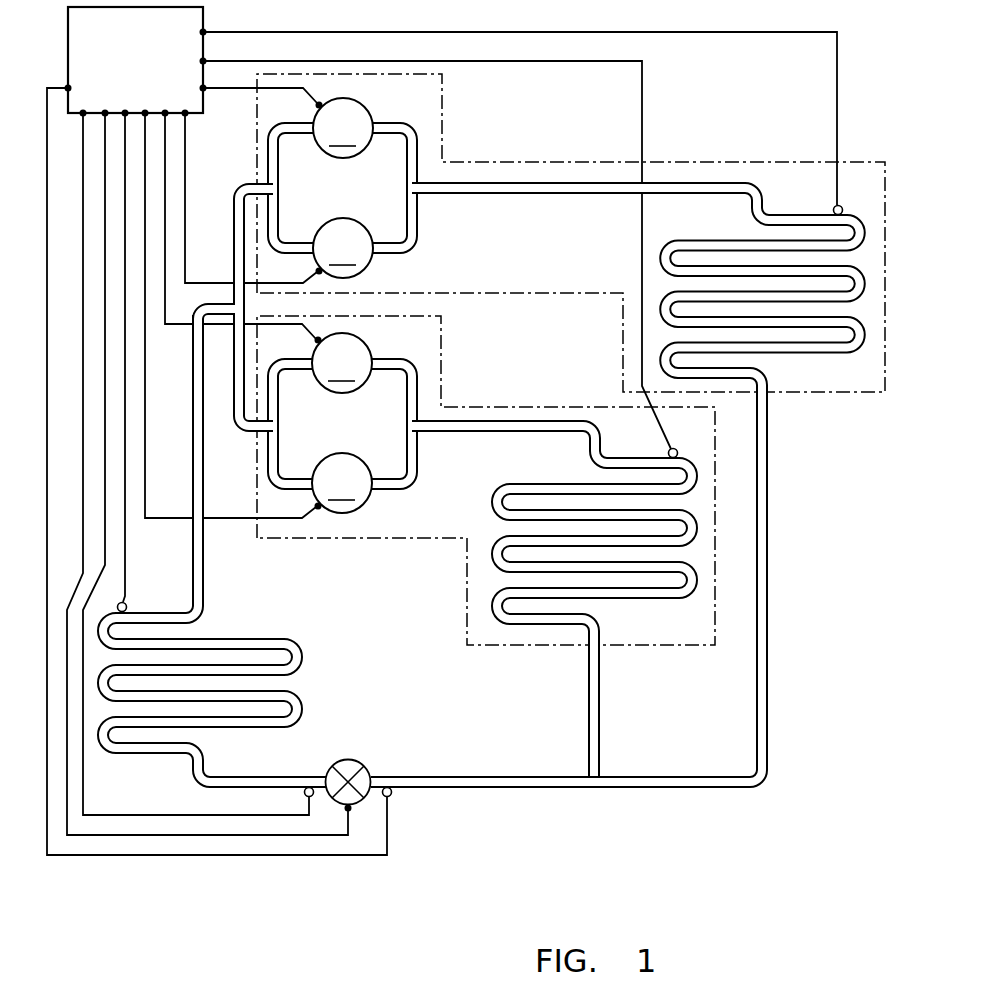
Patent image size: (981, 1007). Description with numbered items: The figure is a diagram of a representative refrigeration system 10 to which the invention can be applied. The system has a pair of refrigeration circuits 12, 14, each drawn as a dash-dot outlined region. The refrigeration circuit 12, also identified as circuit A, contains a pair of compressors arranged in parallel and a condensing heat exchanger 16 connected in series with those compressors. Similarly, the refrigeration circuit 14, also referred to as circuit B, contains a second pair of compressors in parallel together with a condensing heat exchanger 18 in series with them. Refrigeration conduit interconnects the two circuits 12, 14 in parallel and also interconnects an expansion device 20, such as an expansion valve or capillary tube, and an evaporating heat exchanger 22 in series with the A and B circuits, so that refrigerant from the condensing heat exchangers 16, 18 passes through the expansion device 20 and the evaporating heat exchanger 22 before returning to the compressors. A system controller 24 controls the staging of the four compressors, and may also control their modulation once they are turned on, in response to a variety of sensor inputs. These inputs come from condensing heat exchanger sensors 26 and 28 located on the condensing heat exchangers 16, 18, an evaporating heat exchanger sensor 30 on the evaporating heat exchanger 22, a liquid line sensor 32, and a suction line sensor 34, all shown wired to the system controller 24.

The refrigeration system 10 is at (568, 242).
The refrigeration circuit 12 is at (443, 100).
The refrigeration circuit 14 is at (443, 340).
The condensing heat exchanger 16 is at (731, 236).
The condensing heat exchanger 18 is at (561, 486).
The expansion device 20 is at (348, 759).
The evaporating heat exchanger 22 is at (230, 638).
The system controller 24 is at (151, 82).
The condensing heat exchanger sensor 26 is at (833, 210).
The condensing heat exchanger sensor 28 is at (668, 453).
The evaporating heat exchanger sensor 30 is at (127, 607).
The liquid line sensor 32 is at (389, 796).
The suction line sensor 34 is at (304, 792).